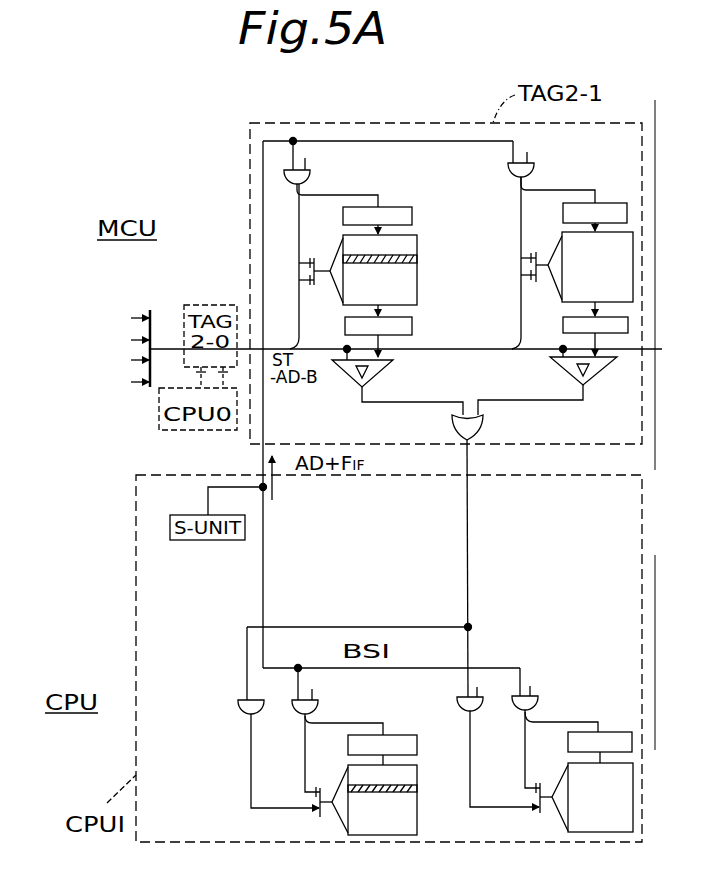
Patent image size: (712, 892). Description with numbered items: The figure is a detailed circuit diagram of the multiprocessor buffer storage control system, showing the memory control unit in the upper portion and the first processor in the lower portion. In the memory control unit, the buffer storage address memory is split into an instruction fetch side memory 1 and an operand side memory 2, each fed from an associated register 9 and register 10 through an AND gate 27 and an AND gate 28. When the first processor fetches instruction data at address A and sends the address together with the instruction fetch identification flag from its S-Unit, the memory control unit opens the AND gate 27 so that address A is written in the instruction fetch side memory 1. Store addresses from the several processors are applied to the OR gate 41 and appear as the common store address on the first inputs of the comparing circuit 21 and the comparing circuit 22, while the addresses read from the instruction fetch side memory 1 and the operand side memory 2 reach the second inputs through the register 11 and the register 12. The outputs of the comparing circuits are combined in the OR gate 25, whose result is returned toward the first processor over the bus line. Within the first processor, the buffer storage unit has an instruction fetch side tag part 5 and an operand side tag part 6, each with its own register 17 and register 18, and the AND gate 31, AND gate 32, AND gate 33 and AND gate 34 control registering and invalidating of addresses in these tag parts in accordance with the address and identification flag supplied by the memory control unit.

The IF side buffer storage address memory 1 is at (416, 238).
The OP side buffer storage address memory 2 is at (560, 238).
The IF side tag part 5 is at (417, 822).
The OP side tag part 6 is at (568, 832).
The register 9 is at (403, 207).
The register 10 is at (612, 203).
The register 11 is at (412, 325).
The register 12 is at (563, 322).
The register 17 is at (417, 740).
The register 18 is at (606, 732).
The comparing circuit 21 is at (385, 375).
The comparing circuit 22 is at (550, 365).
The OR gate 25 is at (485, 425).
The AND gate 27 is at (312, 176).
The AND gate 28 is at (535, 170).
The AND gate 31 is at (238, 707).
The AND gate 32 is at (318, 705).
The AND gate 33 is at (457, 705).
The AND gate 34 is at (538, 703).
The OR gate 41 is at (148, 312).